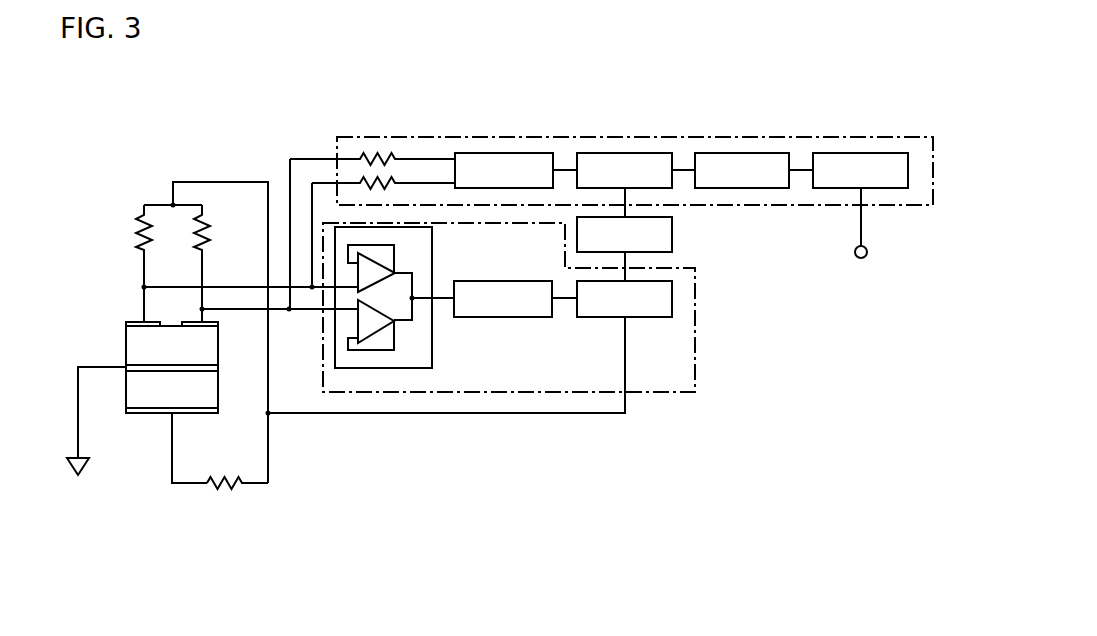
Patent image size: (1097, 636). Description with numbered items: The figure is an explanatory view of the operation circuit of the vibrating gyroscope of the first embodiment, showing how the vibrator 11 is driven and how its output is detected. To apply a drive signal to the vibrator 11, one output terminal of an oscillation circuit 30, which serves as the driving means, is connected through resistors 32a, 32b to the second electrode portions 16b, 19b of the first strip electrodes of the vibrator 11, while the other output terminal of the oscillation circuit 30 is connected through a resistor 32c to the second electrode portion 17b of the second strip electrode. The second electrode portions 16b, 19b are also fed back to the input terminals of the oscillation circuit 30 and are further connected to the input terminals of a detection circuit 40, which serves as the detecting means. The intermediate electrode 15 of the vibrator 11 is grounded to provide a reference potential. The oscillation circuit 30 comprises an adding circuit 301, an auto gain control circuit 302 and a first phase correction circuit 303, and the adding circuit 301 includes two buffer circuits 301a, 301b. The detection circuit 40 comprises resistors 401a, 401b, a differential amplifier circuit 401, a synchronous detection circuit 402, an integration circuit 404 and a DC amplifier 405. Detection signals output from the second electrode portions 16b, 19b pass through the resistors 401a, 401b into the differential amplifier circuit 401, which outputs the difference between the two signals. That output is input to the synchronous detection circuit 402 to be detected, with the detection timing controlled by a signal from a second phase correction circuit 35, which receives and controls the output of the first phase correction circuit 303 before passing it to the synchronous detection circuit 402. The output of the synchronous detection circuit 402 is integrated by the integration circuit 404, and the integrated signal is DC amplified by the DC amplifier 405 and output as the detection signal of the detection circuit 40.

The vibrator 11 is at (133, 413).
The intermediate electrode 15 is at (220, 367).
The second electrode portion 16b is at (133, 320).
The second electrode portion 17b is at (207, 414).
The second electrode portion 19b is at (183, 320).
The oscillation circuit 30 is at (655, 392).
The adding circuit 301 is at (432, 348).
The buffer circuit 301a is at (367, 280).
The buffer circuit 301b is at (370, 338).
The auto gain control (AGC) circuit 302 is at (533, 317).
The first phase correction circuit 303 is at (673, 297).
The resistor 32a is at (143, 213).
The resistor 32b is at (206, 228).
The resistor 32c is at (220, 487).
The second phase correction circuit 35 is at (673, 232).
The detection circuit 40 is at (885, 137).
The differential amplifier circuit 401 is at (473, 153).
The resistor 401a is at (376, 153).
The resistor 401b is at (362, 177).
The synchronous detection circuit 402 is at (595, 153).
The integration circuit 404 is at (712, 153).
The DC amplifier 405 is at (835, 153).